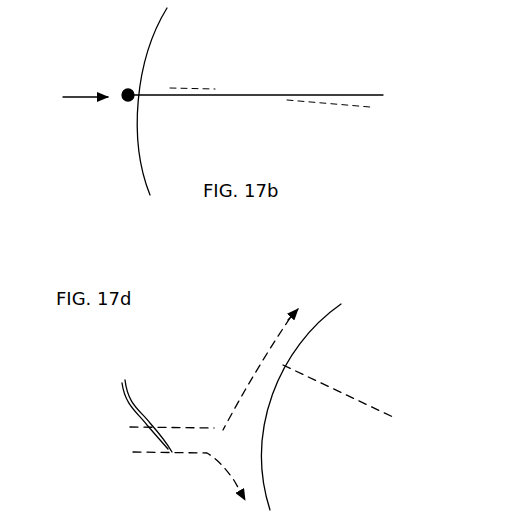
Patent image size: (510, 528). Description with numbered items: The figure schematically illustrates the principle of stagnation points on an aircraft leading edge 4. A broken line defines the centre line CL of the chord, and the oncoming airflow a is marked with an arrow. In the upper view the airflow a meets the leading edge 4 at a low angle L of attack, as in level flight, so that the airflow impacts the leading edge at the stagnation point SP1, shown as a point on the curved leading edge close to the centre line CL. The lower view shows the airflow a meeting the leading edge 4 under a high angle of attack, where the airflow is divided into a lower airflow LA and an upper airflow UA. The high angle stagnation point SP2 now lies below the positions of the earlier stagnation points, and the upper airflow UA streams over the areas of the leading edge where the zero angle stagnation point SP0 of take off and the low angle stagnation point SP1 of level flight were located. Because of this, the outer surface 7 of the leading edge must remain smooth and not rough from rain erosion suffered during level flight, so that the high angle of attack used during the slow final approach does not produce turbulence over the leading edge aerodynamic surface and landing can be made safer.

In FIG. 17b, the airflow a is at (80, 96).
In FIG. 17d, the airflow a is at (168, 406).
In FIG. 17b, the low angle of attack L is at (150, 93).
In FIG. 17b, the centre line of the chord CL is at (315, 103).
In FIG. 17d, the centre line of the chord CL is at (330, 393).
In FIG. 17b, the stagnation point at low angle of attack SP1 is at (119, 116).
In FIG. 17d, the stagnation point at low angle of attack SP1 is at (247, 382).
In FIG. 17d, the upper airflow UA is at (288, 320).
In FIG. 17d, the outer surface 7 is at (341, 304).
In FIG. 17d, the stagnation point at zero angle of attack SP0 is at (262, 356).
In FIG. 17d, the stagnation point at high angle of attack SP2 is at (227, 431).
In FIG. 17d, the lower airflow LA is at (233, 473).
In FIG. 17d, the leading edge 4 is at (340, 499).